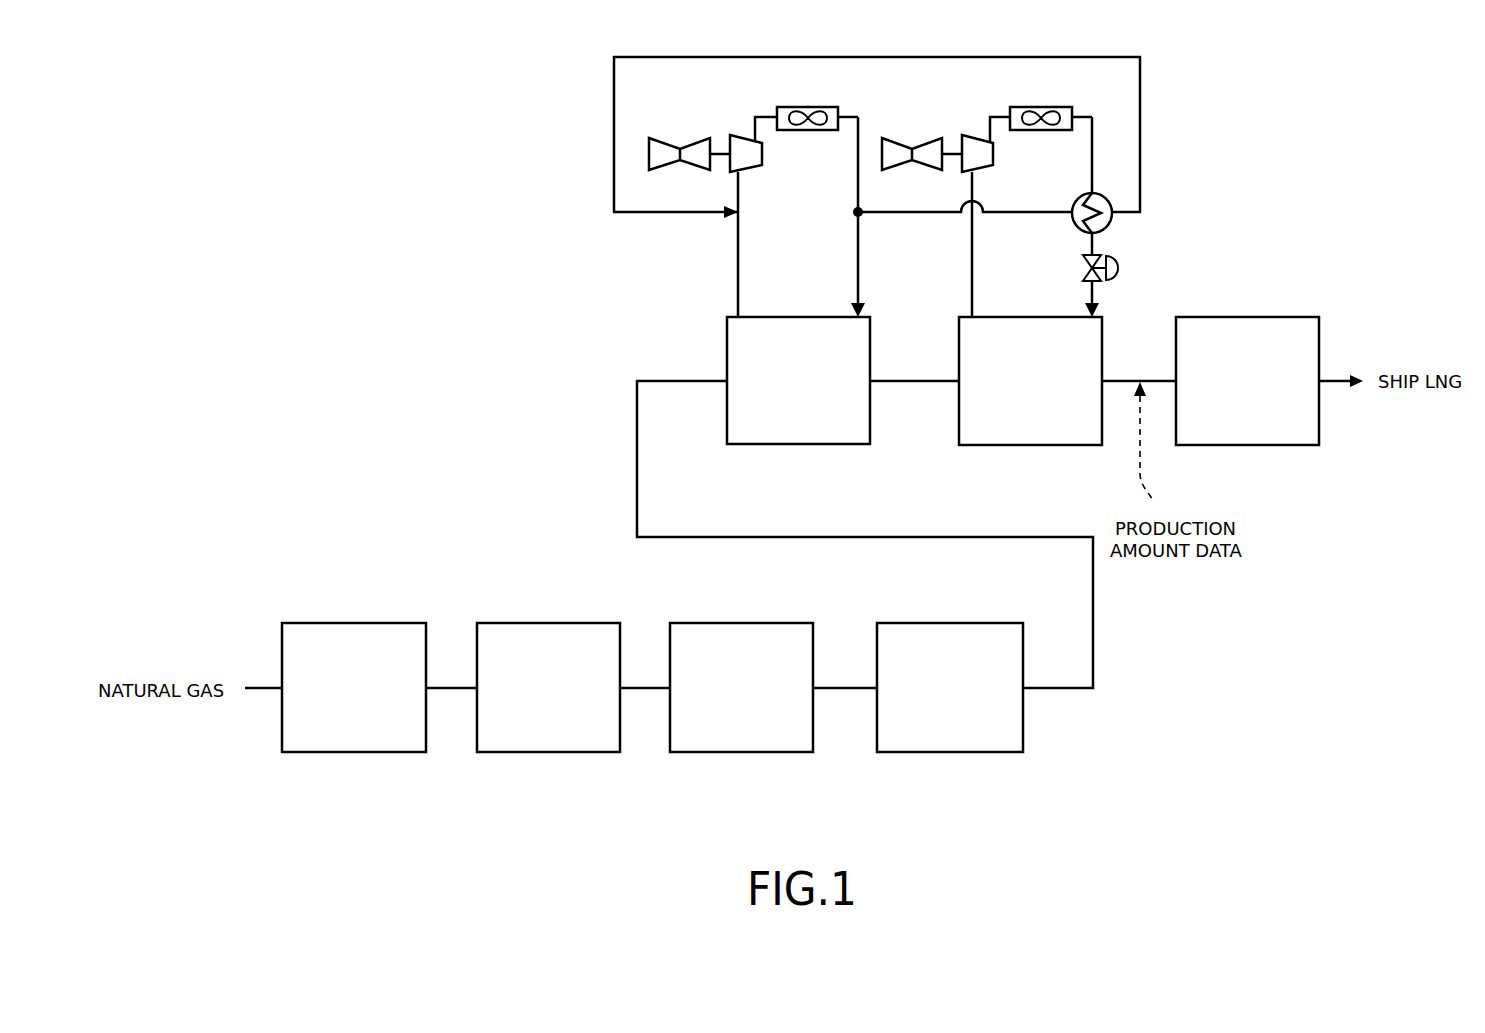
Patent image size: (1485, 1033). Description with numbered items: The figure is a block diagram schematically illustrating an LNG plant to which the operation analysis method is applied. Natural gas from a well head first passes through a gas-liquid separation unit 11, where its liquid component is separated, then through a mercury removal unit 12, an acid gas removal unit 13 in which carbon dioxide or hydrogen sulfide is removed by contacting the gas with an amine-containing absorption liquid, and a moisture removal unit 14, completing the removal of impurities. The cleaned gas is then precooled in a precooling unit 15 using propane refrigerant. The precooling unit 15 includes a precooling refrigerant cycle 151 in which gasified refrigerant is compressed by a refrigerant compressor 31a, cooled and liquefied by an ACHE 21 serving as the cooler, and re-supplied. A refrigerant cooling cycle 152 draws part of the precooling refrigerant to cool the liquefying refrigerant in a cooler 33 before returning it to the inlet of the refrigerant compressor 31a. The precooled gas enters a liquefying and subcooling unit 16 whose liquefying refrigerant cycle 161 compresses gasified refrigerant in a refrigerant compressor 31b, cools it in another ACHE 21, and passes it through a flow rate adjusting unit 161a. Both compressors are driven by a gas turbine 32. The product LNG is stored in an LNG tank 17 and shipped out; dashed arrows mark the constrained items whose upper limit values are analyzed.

The gas-liquid separation unit 11 is at (355, 623).
The mercury removal unit 12 is at (548, 623).
The acid gas removal unit 13 is at (743, 623).
The moisture removal unit 14 is at (948, 623).
The precooling unit 15 is at (798, 444).
The liquefying and subcooling unit 16 is at (1030, 445).
The LNG tank 17 is at (1247, 445).
The precooling refrigerant cycle 151 is at (856, 249).
The refrigerant cooling cycle 152 is at (614, 126).
The liquefying refrigerant cycle 161 is at (1093, 149).
The flow rate adjusting unit 161a is at (1120, 272).
The ACHE 21 is at (808, 107).
The refrigerant compressor 31a is at (738, 135).
The refrigerant compressor 31b is at (972, 135).
The gas turbine 32 is at (680, 147).
The cooler 33 is at (1106, 197).